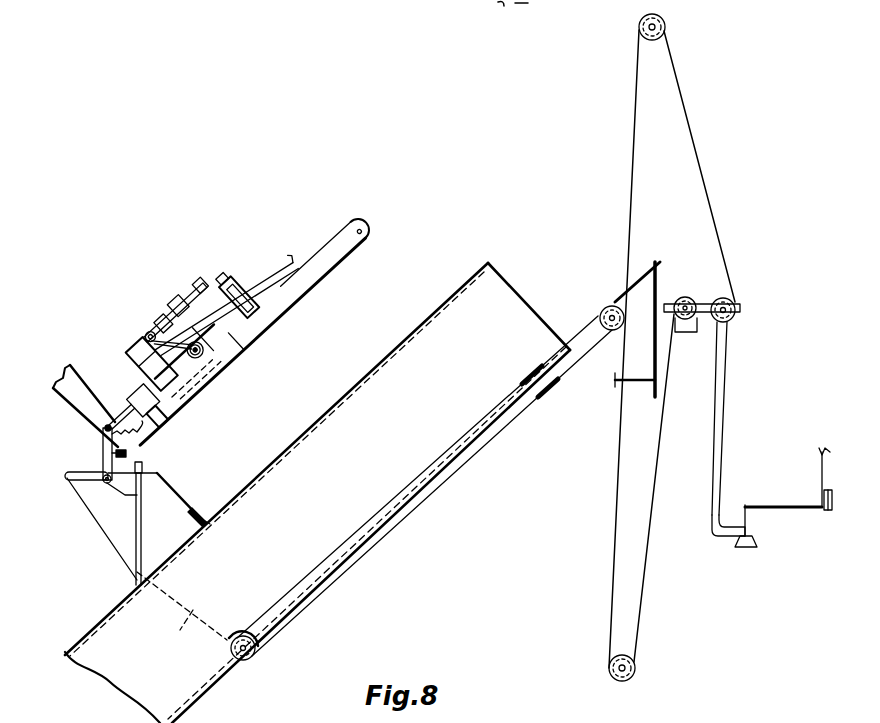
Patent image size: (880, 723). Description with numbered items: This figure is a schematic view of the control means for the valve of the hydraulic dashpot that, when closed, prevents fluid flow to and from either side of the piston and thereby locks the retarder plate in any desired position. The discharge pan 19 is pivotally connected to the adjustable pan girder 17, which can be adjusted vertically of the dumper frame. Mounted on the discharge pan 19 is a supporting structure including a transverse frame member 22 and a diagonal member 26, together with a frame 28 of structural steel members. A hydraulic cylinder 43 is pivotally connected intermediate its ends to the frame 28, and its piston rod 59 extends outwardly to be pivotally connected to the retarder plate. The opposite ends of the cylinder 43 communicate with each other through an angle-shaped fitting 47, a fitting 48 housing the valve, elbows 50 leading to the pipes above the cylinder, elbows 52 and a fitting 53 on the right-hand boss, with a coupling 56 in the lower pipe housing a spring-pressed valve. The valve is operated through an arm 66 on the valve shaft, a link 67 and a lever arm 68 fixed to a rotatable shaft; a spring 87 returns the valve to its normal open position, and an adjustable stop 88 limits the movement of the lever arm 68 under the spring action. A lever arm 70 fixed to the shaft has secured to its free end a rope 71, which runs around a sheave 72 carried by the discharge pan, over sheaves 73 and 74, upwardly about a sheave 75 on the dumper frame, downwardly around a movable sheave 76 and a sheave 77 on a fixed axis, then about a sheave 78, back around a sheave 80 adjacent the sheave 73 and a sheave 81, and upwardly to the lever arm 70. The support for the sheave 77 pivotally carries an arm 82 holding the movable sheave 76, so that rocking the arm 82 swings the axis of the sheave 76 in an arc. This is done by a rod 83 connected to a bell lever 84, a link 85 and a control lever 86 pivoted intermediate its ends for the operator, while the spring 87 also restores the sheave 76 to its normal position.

The adjustable pan girder 17 is at (658, 268).
The discharge pan 19 is at (345, 395).
The frame member 22 is at (189, 506).
The diagonal member 26 is at (150, 524).
The frame 28 is at (192, 395).
The hydraulic cylinder 43 is at (232, 333).
The angle-shaped fitting 47 is at (131, 346).
The fitting 48 is at (148, 332).
The elbow 50 is at (165, 316).
The elbow 52 is at (210, 292).
The fitting 53 is at (200, 280).
The coupling 56 is at (180, 298).
The piston rod 59 is at (282, 277).
The arm 66 is at (191, 347).
The link 67 is at (120, 415).
The lever arm 68 is at (100, 458).
The lever arm 70 is at (100, 484).
The rope 71 is at (195, 628).
The sheave 72 is at (246, 662).
The sheave 73 is at (546, 404).
The sheave 74 is at (606, 308).
The sheave 75 is at (663, 18).
The movable sheave 76 is at (737, 306).
The sheave 77 is at (700, 336).
The sheave 78 is at (643, 664).
The sheave 80 is at (527, 380).
The sheave 81 is at (252, 633).
The arm 82 is at (690, 298).
The rod 83 is at (722, 410).
The bell lever 84 is at (734, 522).
The link 85 is at (772, 511).
The control lever 86 is at (820, 478).
The spring 87 is at (148, 432).
The adjustable stop 88 is at (128, 463).